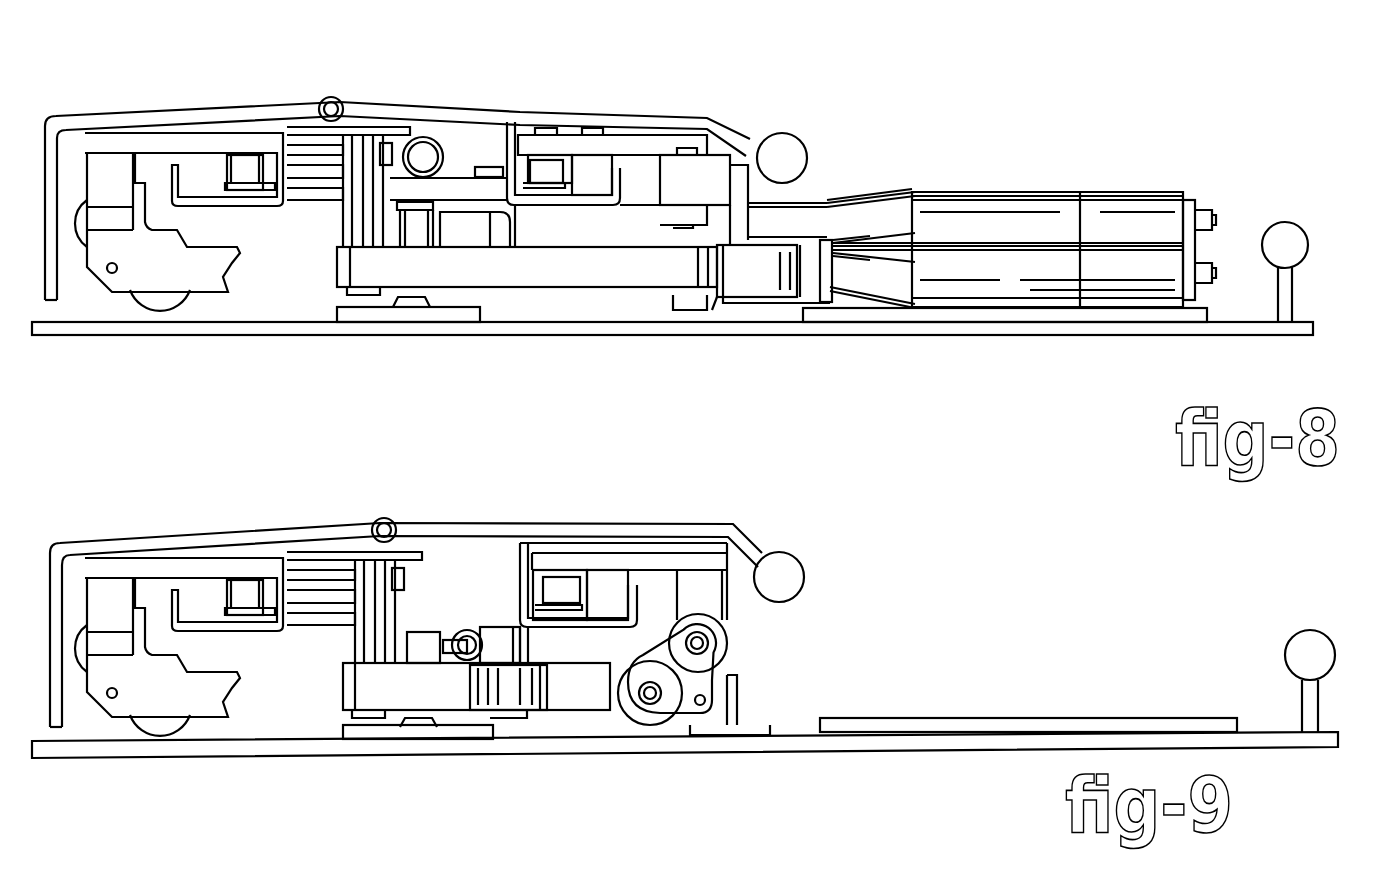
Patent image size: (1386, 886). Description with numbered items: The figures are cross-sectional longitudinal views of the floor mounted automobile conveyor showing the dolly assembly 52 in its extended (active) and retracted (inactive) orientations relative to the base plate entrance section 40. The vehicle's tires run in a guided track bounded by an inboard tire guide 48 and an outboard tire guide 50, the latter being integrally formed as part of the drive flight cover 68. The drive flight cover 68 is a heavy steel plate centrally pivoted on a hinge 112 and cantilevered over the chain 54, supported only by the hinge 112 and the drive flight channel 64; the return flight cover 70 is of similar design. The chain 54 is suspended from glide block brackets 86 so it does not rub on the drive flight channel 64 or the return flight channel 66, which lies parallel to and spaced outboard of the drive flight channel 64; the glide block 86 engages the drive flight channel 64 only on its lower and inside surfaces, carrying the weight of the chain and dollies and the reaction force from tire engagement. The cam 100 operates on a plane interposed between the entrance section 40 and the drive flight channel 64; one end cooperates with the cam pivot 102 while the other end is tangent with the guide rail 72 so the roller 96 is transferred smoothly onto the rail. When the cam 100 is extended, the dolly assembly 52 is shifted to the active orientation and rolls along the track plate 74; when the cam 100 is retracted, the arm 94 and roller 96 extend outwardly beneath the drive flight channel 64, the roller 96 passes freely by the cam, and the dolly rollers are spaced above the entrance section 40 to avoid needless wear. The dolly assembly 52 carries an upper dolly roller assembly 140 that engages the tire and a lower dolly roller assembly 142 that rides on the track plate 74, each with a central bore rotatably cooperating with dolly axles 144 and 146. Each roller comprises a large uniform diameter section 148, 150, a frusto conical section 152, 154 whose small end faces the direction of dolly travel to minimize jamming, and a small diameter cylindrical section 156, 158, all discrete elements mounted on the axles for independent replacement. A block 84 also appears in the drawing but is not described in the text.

In FIG. 8, the base plate entrance section 40 is at (298, 328).
In FIG. 9, the base plate entrance section 40 is at (1282, 748).
In FIG. 8, the inboard tire guide 48 is at (1290, 255).
In FIG. 9, the inboard tire guide 48 is at (1325, 650).
In FIG. 8, the outboard tire guide 50 is at (782, 158).
In FIG. 9, the outboard tire guide 50 is at (795, 558).
In FIG. 8, the dolly assembly 52 is at (940, 191).
In FIG. 8, the chain 54 is at (550, 165).
In FIG. 8, the drive flight channel 64 is at (570, 200).
In FIG. 9, the drive flight channel 64 is at (515, 560).
In FIG. 9, the return flight channel 66 is at (258, 625).
In FIG. 9, the drive flight cover 68 is at (628, 548).
In FIG. 9, the return flight cover 70 is at (95, 542).
In FIG. 8, the guide rail 72 is at (700, 292).
In FIG. 8, the track plate 74 is at (1215, 302).
In FIG. 9, the track plate 74 is at (952, 718).
In FIG. 8, the block 84 is at (590, 175).
In FIG. 8, the glide block bracket 86 is at (672, 148).
In FIG. 9, the arm 94 is at (590, 690).
In FIG. 8, the roller 96 is at (763, 275).
In FIG. 9, the roller 96 is at (530, 705).
In FIG. 8, the cam 100 is at (517, 268).
In FIG. 9, the cam 100 is at (476, 686).
In FIG. 8, the cam pivot 102 is at (367, 292).
In FIG. 9, the cam pivot 102 is at (418, 732).
In FIG. 9, the hinge 112 is at (380, 520).
In FIG. 8, the upper dolly roller assembly 140 is at (1008, 191).
In FIG. 8, the lower dolly roller assembly 142 is at (992, 287).
In FIG. 8, the dolly axle 144 is at (1215, 215).
In FIG. 8, the dolly axle 146 is at (1212, 268).
In FIG. 8, the large uniform diameter section 148 is at (1058, 195).
In FIG. 8, the large uniform diameter section 150 is at (1045, 295).
In FIG. 8, the frusto conical section 152 is at (878, 200).
In FIG. 8, the frusto conical section 154 is at (890, 275).
In FIG. 8, the small diameter cylindrical section 156 is at (812, 205).
In FIG. 8, the small diameter cylindrical section 158 is at (818, 290).